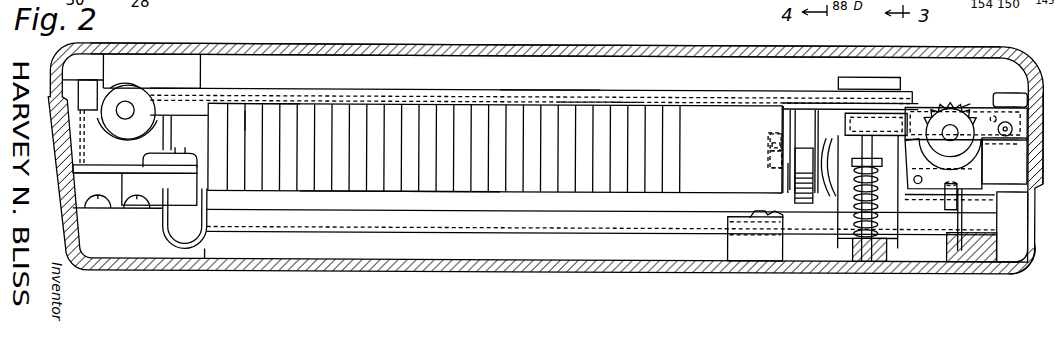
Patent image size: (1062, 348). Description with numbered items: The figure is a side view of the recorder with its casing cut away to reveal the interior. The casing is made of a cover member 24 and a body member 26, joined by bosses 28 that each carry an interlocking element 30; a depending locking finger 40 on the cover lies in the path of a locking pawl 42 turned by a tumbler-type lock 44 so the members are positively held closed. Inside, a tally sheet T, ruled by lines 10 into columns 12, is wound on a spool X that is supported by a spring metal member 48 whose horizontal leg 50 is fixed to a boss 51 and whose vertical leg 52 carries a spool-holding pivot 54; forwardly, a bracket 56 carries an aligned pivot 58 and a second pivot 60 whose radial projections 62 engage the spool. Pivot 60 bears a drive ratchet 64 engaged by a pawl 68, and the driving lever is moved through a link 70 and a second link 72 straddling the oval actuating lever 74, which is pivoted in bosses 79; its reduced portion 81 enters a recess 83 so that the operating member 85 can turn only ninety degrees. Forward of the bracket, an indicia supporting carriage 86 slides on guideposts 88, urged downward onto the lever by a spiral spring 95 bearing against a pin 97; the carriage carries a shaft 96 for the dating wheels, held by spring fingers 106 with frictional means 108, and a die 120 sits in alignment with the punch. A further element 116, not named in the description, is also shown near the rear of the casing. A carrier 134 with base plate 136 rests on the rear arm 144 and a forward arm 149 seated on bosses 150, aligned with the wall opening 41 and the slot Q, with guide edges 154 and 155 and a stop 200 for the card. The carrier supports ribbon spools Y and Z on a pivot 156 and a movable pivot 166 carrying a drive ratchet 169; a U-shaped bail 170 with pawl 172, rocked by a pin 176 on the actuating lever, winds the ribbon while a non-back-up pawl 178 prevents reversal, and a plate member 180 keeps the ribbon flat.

The lines 10 is at (403, 106).
The columns 12 is at (462, 112).
The cover member 24 is at (531, 47).
The body member 26 is at (528, 271).
The bosses 28 is at (187, 55).
The interlocking element 30 is at (190, 126).
The locking finger 40 is at (100, 155).
The wall opening 41 is at (1036, 94).
The locking pawl 42 is at (88, 185).
The tumbler-type lock 44 is at (128, 193).
The spring metal member 48 is at (205, 182).
The horizontal leg 50 is at (145, 208).
The boss 51 is at (143, 248).
The vertical leg 52 is at (203, 202).
The spool-holding pivot 54 is at (229, 100).
The bracket 56 is at (787, 168).
The pivot 58 is at (772, 156).
The pivot 60 is at (777, 130).
The radial projections 62 is at (770, 133).
The drive ratchet 64 is at (832, 124).
The pawl 68 is at (812, 124).
The link 70 is at (790, 199).
The second link 72 is at (787, 229).
The actuating lever 74 is at (613, 226).
The bosses 79 is at (203, 251).
The reduced portion 81 is at (990, 219).
The recess 83 is at (1030, 185).
The operating member 85 is at (1020, 252).
The indicia supporting carriage 86 is at (850, 226).
The guideposts 88 is at (870, 250).
The spiral spring 95 is at (878, 179).
The shaft 96 is at (875, 146).
The pin 97 is at (854, 167).
The spring fingers 106 is at (832, 201).
The frictional means 108 is at (829, 150).
The rod 116 is at (80, 136).
The die 120 is at (853, 84).
The carrier 134 is at (552, 92).
The base plate 136 is at (492, 97).
The arm 144 is at (70, 102).
The arm 149 is at (1006, 140).
The bosses 150 is at (968, 164).
The upturned guide edges 154 is at (1003, 89).
The upturned guide edge 155 is at (362, 91).
The pivot 156 is at (131, 107).
The movable pivot 166 is at (948, 128).
The drive ratchet 169 is at (938, 99).
The U-shaped bail 170 is at (967, 182).
The pawl 172 is at (903, 191).
The pin 176 is at (950, 212).
The non-back-up pawl 178 is at (1002, 161).
The plate member 180 is at (599, 98).
The stop 200 is at (321, 91).
The tally sheet T is at (405, 191).
The spool X is at (244, 116).
The inking ribbon spool Y is at (125, 78).
The inking ribbon spool Z is at (970, 98).
The slot Q is at (1045, 92).